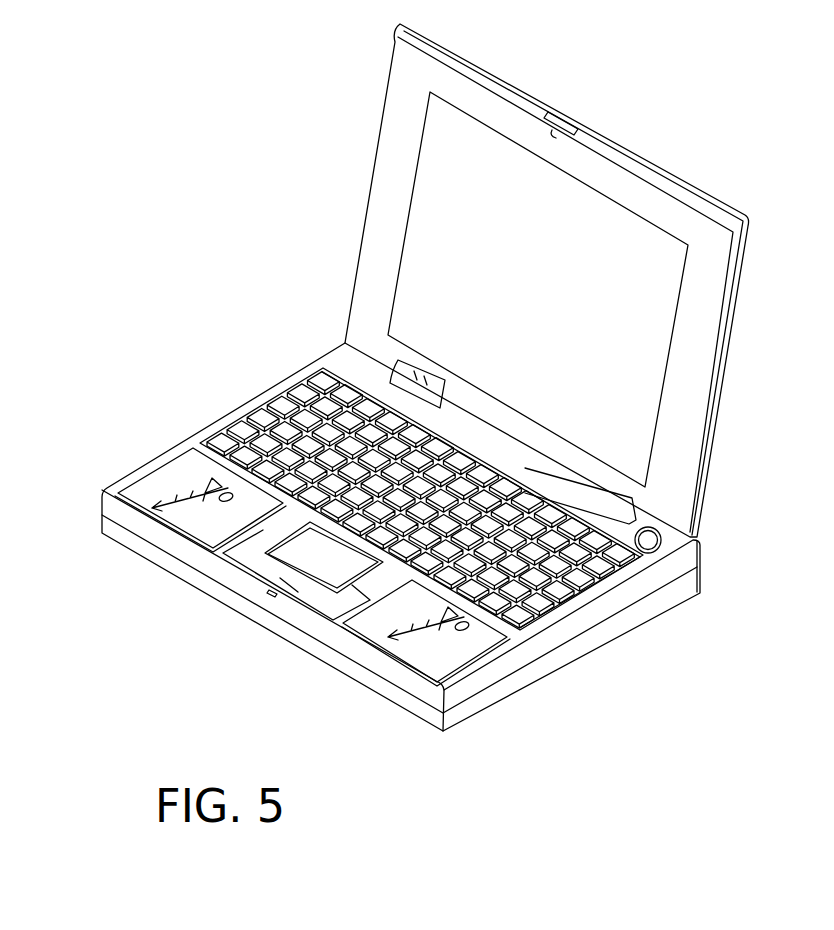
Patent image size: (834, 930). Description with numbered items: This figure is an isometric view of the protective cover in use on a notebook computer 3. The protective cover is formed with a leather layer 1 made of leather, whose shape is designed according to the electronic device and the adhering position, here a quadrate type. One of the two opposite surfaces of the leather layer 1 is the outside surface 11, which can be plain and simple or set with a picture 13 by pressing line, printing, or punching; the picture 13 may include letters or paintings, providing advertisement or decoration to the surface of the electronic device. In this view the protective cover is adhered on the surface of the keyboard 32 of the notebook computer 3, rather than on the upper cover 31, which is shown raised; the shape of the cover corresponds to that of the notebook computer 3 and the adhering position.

The leather layer 1 is at (430, 377).
The notebook computer 3 is at (381, 537).
The outside surface 11 is at (174, 509).
The picture 13 is at (157, 503).
The upper cover 31 is at (724, 357).
The keyboard 32 is at (513, 638).